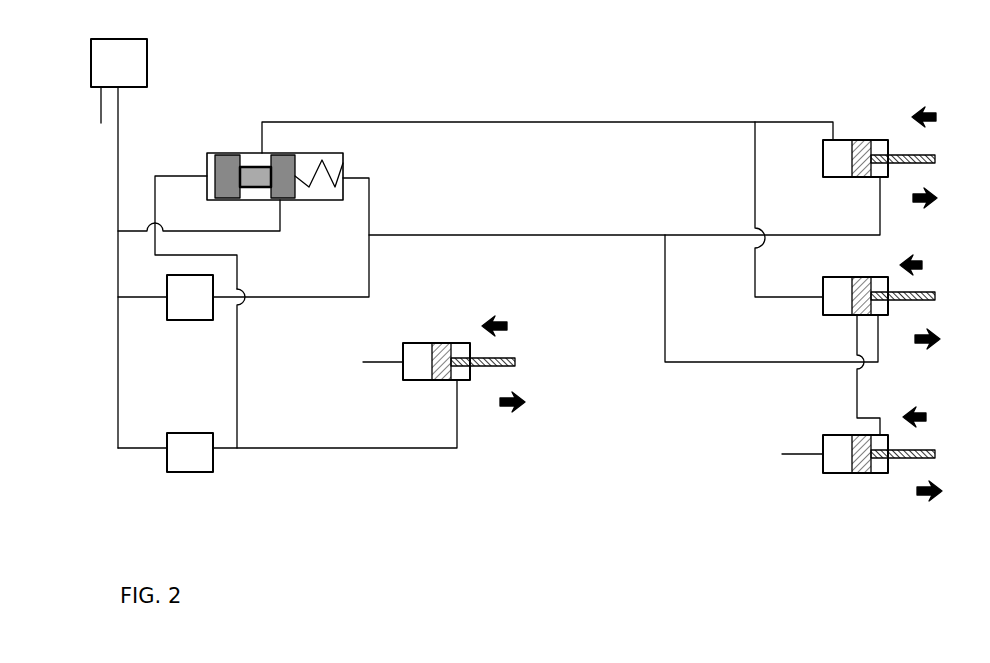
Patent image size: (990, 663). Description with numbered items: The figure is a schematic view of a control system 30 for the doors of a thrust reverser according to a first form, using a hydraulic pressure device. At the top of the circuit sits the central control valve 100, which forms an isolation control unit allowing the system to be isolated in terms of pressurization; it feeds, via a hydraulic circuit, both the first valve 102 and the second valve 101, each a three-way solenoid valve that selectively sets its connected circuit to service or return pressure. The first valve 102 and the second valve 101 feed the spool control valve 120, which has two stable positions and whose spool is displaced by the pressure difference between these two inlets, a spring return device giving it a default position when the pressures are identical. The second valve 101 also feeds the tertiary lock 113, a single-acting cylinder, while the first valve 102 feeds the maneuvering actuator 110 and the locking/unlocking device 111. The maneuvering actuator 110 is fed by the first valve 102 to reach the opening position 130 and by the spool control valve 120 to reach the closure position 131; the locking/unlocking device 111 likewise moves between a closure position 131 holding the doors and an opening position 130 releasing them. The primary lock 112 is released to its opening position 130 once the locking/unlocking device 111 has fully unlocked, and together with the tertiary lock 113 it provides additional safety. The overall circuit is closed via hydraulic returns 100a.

The control system 30 is at (467, 88).
The central control valve 100 is at (135, 58).
The hydraulic returns 100a is at (100, 117).
The second valve 101 is at (173, 462).
The first valve 102 is at (172, 310).
The maneuvering actuator 110 is at (827, 177).
The locking/unlocking device 111 is at (822, 315).
The primary lock 112 is at (822, 470).
The tertiary lock 113 is at (445, 343).
The spool control valve 120 is at (343, 157).
The opening position 130 is at (912, 108).
The closure position 131 is at (926, 208).